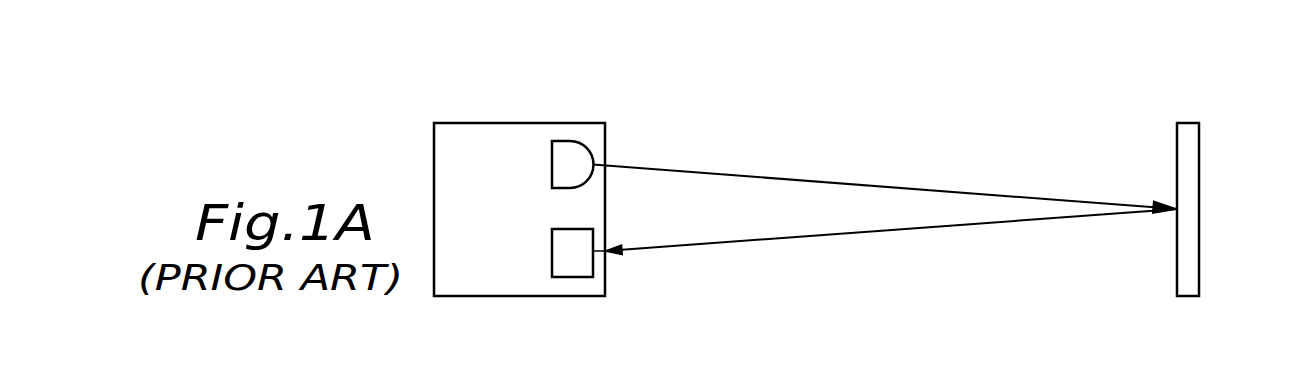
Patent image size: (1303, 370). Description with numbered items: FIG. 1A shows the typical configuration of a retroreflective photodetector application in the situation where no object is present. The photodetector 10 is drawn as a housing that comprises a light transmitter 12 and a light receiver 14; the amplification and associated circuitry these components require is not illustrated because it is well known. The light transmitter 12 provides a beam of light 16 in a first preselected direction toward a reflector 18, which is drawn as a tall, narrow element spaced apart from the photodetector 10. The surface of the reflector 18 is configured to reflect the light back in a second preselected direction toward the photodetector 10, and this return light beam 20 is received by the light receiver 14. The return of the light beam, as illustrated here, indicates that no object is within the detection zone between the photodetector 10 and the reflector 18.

The photodetector 10 is at (453, 132).
The light transmitter 12 is at (563, 157).
The light receiver 14 is at (575, 268).
The beam of light 16 is at (822, 178).
The reflector 18 is at (1199, 151).
The return light beam 20 is at (802, 239).